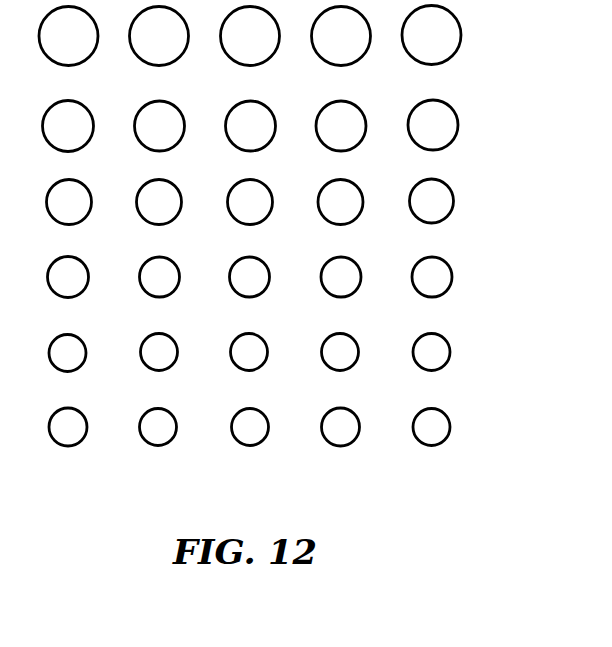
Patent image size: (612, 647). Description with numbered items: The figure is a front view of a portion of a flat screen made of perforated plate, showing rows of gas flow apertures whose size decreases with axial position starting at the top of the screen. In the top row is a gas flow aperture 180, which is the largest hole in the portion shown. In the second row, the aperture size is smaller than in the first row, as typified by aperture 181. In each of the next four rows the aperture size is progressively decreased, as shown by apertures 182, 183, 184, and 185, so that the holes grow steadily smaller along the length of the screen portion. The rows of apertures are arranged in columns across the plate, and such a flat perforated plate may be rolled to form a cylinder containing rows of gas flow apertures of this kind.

The gas flow aperture 180 is at (250, 36).
The aperture 181 is at (251, 126).
The aperture 182 is at (428, 212).
The aperture 183 is at (433, 283).
The aperture 184 is at (427, 355).
The aperture 185 is at (430, 429).